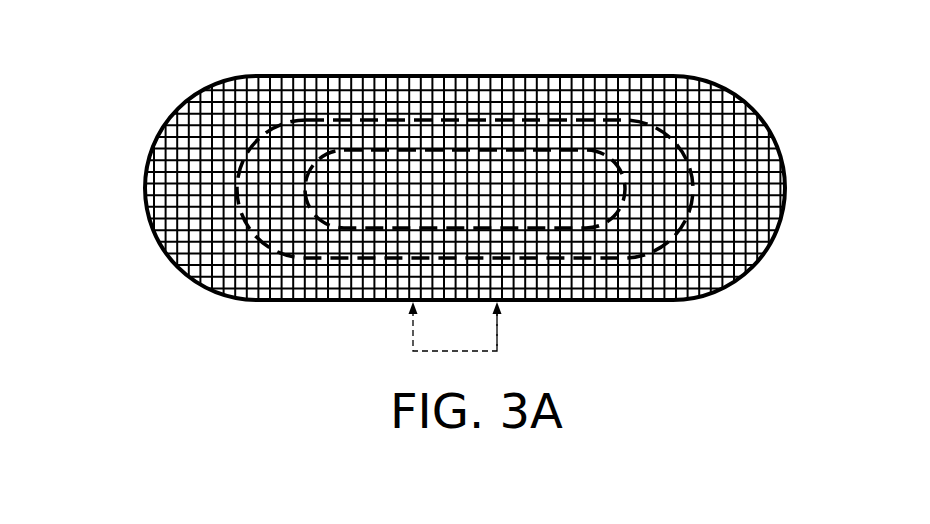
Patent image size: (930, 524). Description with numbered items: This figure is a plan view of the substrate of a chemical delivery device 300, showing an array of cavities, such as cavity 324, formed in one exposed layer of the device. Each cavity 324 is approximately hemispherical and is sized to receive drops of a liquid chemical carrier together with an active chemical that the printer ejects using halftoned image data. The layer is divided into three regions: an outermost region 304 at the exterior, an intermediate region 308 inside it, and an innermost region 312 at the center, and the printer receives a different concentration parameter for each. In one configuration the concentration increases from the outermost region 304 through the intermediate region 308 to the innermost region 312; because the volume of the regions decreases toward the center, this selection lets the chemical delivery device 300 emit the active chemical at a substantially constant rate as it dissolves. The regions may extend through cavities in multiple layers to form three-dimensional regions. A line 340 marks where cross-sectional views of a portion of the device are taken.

The chemical delivery device 300 is at (427, 156).
The outermost region 304 is at (226, 125).
The intermediate region 308 is at (387, 128).
The innermost region 312 is at (480, 176).
The cavity 324 is at (454, 300).
The line 340 is at (498, 333).